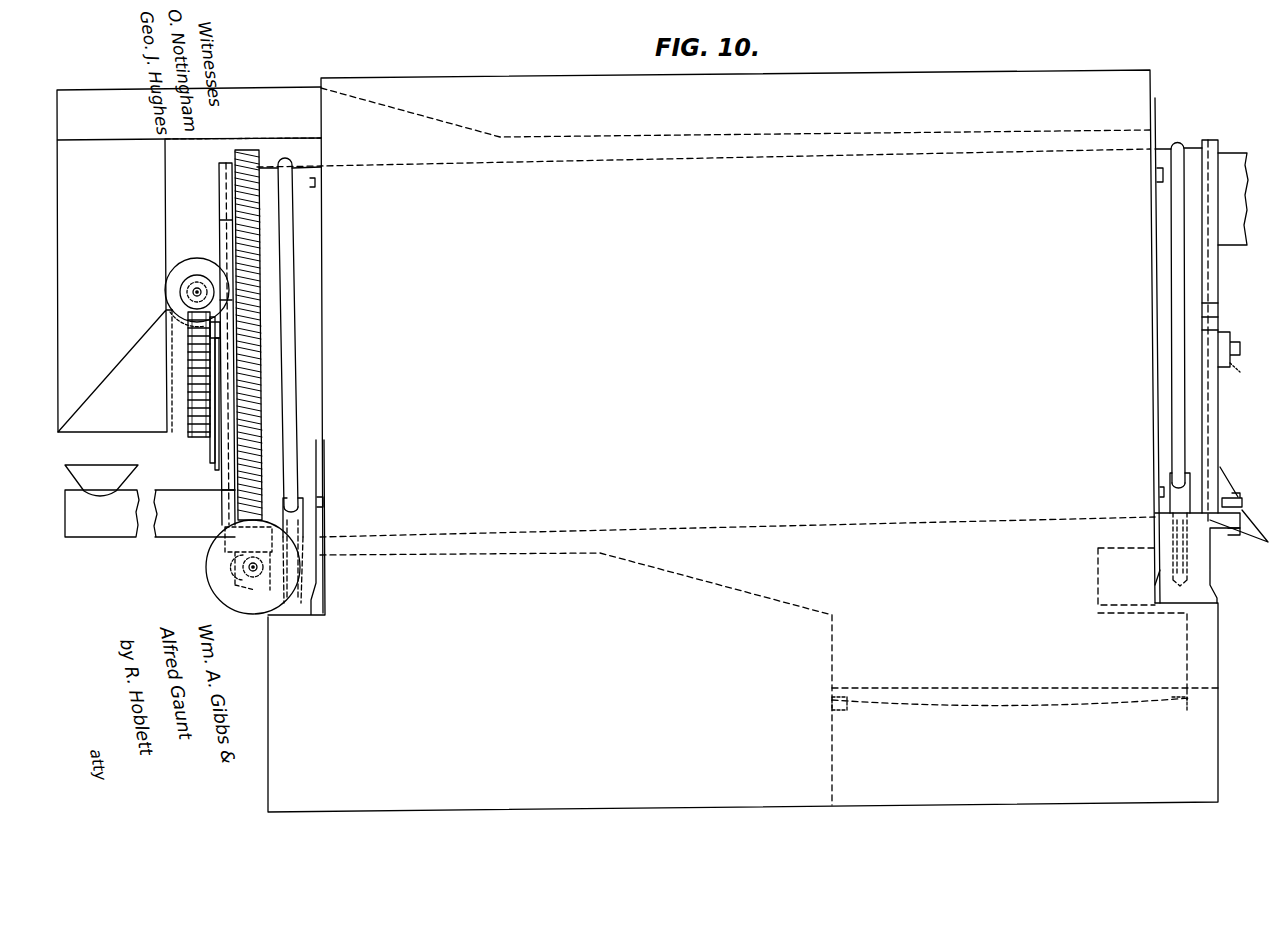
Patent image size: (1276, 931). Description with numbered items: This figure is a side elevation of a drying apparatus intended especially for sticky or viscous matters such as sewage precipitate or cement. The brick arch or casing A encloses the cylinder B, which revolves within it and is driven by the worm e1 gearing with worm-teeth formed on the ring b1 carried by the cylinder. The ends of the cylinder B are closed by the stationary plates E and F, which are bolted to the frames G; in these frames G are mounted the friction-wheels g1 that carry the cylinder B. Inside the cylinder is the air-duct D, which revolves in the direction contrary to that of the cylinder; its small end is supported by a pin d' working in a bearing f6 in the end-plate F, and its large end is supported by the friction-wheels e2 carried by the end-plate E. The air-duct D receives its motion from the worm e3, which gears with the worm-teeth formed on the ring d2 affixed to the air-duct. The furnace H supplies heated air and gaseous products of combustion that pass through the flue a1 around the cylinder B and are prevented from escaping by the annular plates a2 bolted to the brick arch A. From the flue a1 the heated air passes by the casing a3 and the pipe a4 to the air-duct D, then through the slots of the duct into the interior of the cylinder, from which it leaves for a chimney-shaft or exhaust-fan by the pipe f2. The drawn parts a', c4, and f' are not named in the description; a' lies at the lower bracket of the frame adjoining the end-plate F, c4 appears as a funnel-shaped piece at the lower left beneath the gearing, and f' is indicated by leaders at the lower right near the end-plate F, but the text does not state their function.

The brick arch or casing A is at (743, 441).
The flue a1 is at (703, 128).
The annular plates a2 is at (296, 329).
The casing a3 is at (189, 259).
The pipe a4 is at (115, 286).
The lower bracket of frame a' is at (1198, 535).
The ring b1 is at (268, 151).
The cylinder B is at (1202, 313).
The end-plate E is at (210, 344).
The worm e1 is at (250, 580).
The friction-wheels e2 is at (218, 463).
The worm e3 is at (197, 292).
The air-duct D is at (190, 373).
The ring d2 is at (196, 440).
The pin d' is at (1240, 349).
The hopper / funnel c4 is at (150, 501).
The friction-wheels g1 is at (303, 550).
The frames G is at (296, 527).
The pipe f2 is at (1233, 199).
The bearing f6 is at (1243, 374).
The end-plate F is at (1217, 332).
The lever arm f' is at (1242, 530).
The furnace H is at (769, 661).